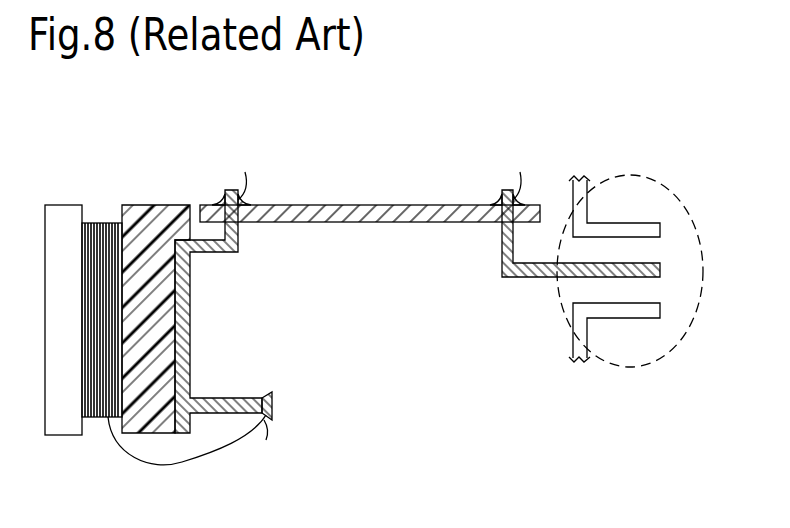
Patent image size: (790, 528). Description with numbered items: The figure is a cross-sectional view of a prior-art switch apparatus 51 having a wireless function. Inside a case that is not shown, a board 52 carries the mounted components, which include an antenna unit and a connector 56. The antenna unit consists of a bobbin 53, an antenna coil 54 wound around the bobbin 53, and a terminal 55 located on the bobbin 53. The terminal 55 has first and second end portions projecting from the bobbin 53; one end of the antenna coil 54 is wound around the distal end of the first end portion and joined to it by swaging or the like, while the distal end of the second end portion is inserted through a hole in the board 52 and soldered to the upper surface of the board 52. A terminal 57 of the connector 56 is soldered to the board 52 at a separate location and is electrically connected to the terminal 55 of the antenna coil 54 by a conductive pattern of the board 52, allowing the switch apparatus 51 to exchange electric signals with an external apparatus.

The switch apparatus having a wireless function 51 is at (557, 77).
The board 52 is at (356, 205).
The bobbin 53 is at (45, 215).
The antenna coil 54 is at (95, 418).
The terminal 55 is at (238, 238).
The connector 56 is at (627, 367).
The terminal 57 is at (625, 263).